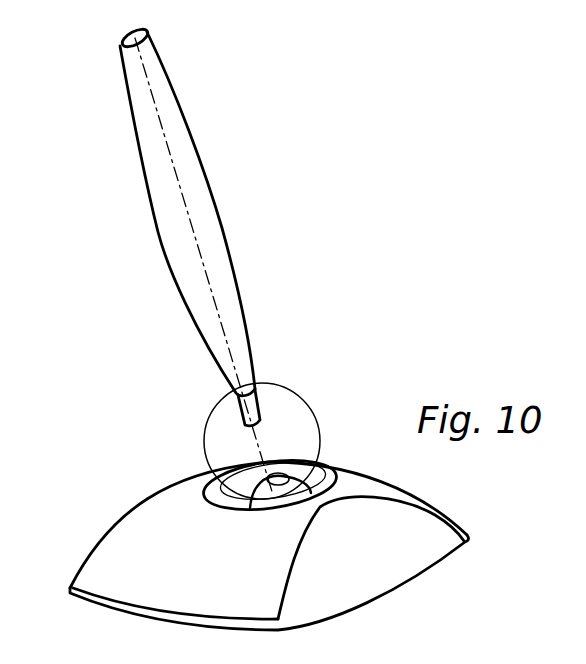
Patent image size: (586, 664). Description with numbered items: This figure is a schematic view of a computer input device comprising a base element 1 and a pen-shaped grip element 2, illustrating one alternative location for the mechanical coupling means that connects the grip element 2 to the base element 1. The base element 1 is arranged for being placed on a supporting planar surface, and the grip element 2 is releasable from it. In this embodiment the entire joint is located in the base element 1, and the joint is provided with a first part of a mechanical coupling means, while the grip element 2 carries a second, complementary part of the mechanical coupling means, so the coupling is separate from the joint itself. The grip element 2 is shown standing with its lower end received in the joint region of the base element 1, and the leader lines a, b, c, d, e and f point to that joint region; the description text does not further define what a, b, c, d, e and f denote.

The base element 1 is at (118, 567).
The grip element 2 is at (218, 233).
The pivot region position a is at (203, 445).
The pivot region position b is at (203, 445).
The pivot region position c is at (203, 445).
The pivot region position d is at (203, 445).
The pivot region position e is at (203, 445).
The pivot region position f is at (203, 445).